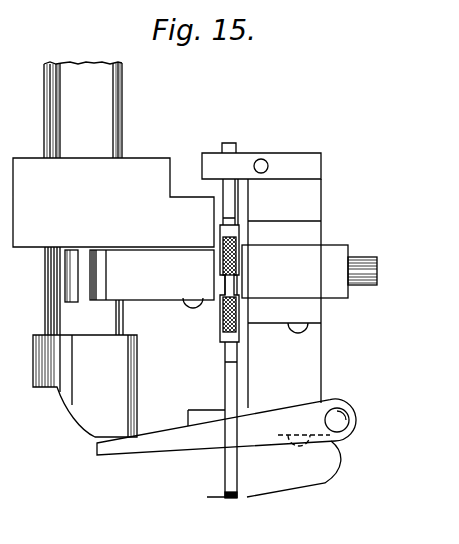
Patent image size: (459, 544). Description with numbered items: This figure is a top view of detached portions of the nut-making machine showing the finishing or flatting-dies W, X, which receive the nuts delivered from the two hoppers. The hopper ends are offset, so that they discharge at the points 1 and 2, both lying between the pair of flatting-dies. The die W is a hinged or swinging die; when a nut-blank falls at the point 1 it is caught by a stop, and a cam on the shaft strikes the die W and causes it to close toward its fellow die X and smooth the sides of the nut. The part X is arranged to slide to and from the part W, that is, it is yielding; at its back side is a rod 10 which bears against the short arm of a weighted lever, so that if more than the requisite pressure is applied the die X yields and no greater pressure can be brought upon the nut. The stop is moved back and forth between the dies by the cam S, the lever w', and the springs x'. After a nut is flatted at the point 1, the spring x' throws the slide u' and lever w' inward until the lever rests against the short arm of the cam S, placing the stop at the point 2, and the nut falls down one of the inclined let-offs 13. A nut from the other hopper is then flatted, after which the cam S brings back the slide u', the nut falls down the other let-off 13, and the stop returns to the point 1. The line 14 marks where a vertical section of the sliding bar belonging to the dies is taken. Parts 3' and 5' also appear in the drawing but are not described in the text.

The discharge point 1 is at (152, 279).
The discharge point 2 is at (284, 293).
The guide bar 3' is at (72, 285).
The rod sleeve 5' is at (229, 283).
The rod 10 is at (362, 271).
The inclined let-offs 13 is at (237, 248).
The section line 14 is at (222, 322).
The hinged or swinging die W is at (134, 275).
The yielding flatting-die X is at (295, 271).
The cam S is at (85, 386).
The lever w' is at (226, 427).
The slide u' is at (241, 420).
The springs x' is at (274, 474).